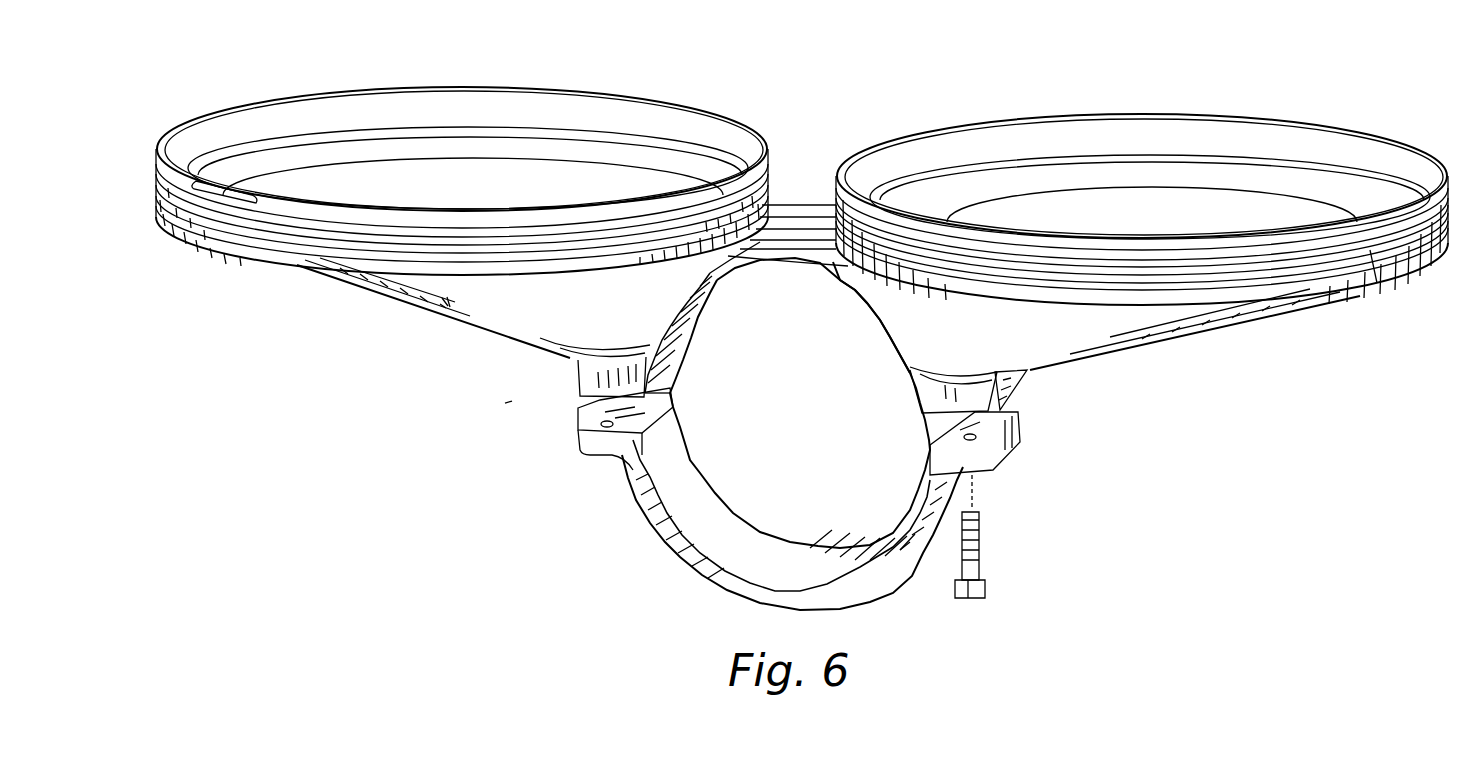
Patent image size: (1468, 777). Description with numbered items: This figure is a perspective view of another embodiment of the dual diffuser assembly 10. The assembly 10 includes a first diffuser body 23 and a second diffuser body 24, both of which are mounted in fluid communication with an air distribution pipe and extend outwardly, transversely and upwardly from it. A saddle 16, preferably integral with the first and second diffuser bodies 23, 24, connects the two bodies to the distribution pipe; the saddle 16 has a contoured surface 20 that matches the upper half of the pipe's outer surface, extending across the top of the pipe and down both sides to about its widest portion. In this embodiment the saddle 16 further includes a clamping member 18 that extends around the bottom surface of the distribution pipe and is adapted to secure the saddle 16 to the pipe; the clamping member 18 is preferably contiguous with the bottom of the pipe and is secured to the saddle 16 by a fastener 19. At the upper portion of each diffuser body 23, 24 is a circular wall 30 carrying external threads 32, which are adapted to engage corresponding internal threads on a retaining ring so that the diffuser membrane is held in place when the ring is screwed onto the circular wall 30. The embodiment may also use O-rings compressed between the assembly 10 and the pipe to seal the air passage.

The dual diffuser assembly 10 is at (508, 403).
The saddle 16 is at (811, 212).
The clamping member 18 is at (677, 527).
The fastener 19 is at (985, 535).
The contoured surface 20 is at (690, 349).
The first diffuser body 23 is at (1150, 320).
The second diffuser body 24 is at (437, 311).
The circular wall 30 is at (530, 100).
The external threads 32 is at (215, 223).